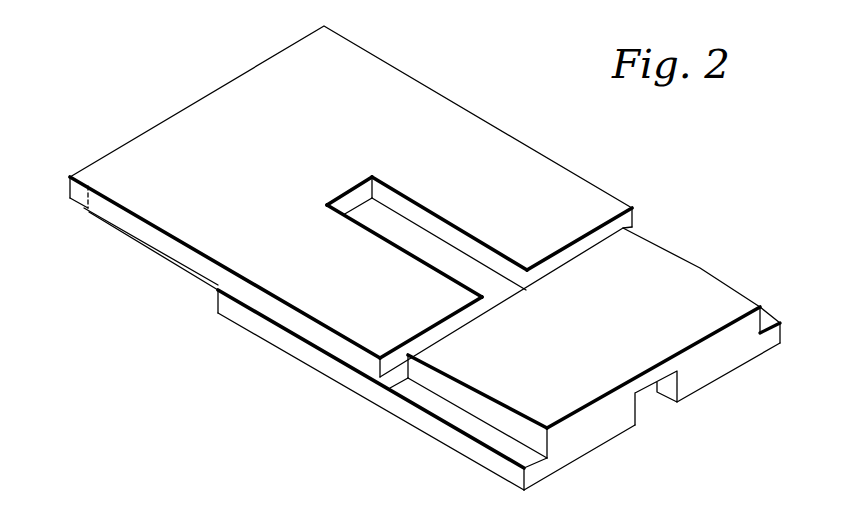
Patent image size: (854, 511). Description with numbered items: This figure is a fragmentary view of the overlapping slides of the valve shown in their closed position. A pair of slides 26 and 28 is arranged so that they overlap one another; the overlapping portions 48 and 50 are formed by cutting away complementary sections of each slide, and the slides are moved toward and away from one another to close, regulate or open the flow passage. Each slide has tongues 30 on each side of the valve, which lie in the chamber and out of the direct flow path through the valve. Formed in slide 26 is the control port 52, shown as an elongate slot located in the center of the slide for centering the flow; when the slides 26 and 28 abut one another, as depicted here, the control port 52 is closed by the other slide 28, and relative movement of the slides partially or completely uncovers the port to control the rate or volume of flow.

The slide 26 is at (285, 156).
The slide 28 is at (596, 347).
The tongue 30 is at (82, 203).
The overlapping portion 48 is at (381, 302).
The overlapping portion 50 is at (423, 254).
The control port 52 is at (464, 243).